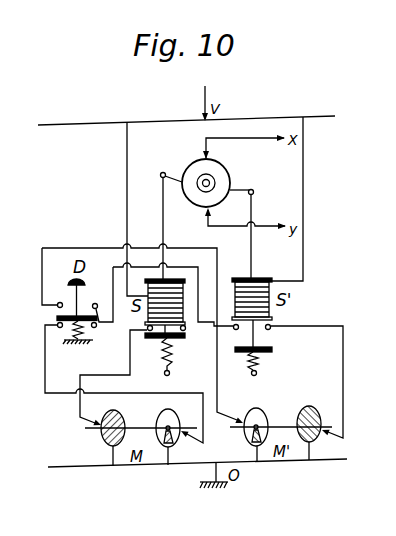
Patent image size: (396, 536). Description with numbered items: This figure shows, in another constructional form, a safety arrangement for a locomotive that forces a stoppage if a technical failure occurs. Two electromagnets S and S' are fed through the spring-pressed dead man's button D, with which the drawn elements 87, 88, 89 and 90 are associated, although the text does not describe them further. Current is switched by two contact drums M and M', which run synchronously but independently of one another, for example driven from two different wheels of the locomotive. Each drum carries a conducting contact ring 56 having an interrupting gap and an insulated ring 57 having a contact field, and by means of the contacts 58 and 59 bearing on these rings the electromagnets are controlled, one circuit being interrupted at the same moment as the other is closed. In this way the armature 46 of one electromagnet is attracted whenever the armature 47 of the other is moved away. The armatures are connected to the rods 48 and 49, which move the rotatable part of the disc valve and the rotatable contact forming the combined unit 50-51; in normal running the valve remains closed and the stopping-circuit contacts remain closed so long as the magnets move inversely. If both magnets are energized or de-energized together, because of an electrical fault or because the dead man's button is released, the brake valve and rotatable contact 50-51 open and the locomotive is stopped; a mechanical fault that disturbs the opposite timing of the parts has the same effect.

The armature 46 is at (177, 340).
The armature 47 is at (268, 353).
The rod 48 is at (163, 217).
The rod 49 is at (252, 252).
The disc valve and rotatable contact 50-51 is at (228, 172).
The conducting contact ring 56 is at (217, 427).
The insulated ring 57 is at (219, 427).
The contact 58 is at (149, 331).
The contact 59 is at (184, 325).
The contact 87 is at (55, 296).
The contact 88 is at (98, 297).
The contact 89 is at (59, 328).
The contact 90 is at (95, 328).